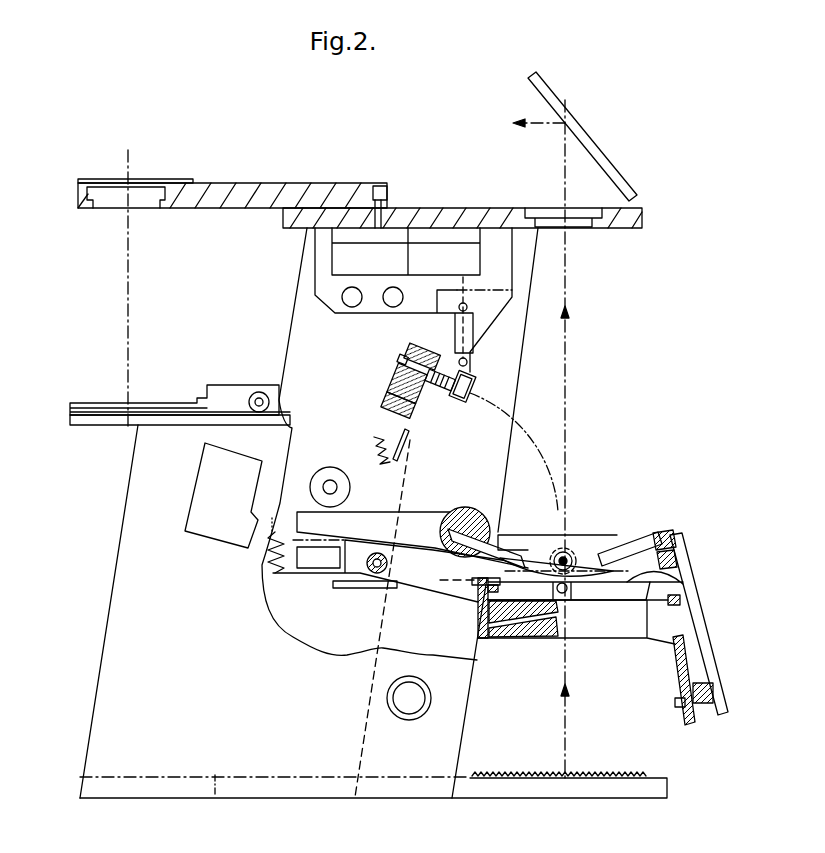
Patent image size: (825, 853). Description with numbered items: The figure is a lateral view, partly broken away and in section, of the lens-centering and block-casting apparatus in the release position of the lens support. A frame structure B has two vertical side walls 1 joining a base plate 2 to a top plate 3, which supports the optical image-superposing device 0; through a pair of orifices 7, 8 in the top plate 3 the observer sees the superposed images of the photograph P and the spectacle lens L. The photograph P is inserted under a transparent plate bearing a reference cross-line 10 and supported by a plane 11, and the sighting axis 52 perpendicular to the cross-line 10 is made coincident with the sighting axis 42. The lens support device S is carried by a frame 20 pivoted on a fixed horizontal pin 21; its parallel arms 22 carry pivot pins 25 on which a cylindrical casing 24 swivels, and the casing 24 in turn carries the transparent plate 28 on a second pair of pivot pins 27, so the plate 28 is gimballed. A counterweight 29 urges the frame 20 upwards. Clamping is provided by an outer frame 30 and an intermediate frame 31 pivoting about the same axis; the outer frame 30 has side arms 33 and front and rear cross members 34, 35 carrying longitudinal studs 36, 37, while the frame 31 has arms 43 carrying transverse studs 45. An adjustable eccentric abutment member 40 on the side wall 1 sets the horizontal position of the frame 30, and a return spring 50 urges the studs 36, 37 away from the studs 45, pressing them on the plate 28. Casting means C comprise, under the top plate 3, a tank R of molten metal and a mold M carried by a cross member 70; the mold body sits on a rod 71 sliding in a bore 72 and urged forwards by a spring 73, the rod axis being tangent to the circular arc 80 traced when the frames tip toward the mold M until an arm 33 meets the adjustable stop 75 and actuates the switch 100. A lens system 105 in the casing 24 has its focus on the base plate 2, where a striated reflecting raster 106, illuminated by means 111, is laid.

The optical device 0 is at (550, 106).
The vertical side wall 1 is at (128, 534).
The base plate 2 is at (521, 790).
The top plate 3 is at (426, 212).
The orifice 7 is at (580, 228).
The orifice 8 is at (110, 207).
The reference cross-line 10 is at (128, 400).
The plane 11 is at (112, 421).
The frame 20 is at (431, 590).
The pivot pin 21 is at (373, 576).
The parallel arm 22 is at (456, 586).
The cylindrical casing 24 is at (626, 633).
The pivot pin 25 is at (566, 594).
The pivot pin 27 is at (459, 645).
The transparent plate 28 is at (684, 582).
The counterweight 29 is at (205, 506).
The outer frame 30 is at (548, 534).
The frame 31 is at (560, 548).
The side arm 33 is at (628, 540).
The front cross member 34 is at (670, 534).
The rear cross member 35 is at (452, 519).
The longitudinal stud 36 is at (630, 551).
The longitudinal stud 37 is at (479, 522).
The adjustable eccentric abutment member 40 is at (331, 480).
The sighting axis 42 is at (566, 370).
The parallel arm 43 is at (418, 543).
The transverse stud 45 is at (567, 558).
The return spring 50 is at (268, 566).
The sighting axis 52 is at (131, 294).
The cross-member 70 is at (398, 384).
The rod 71 is at (418, 352).
The bore 72 is at (404, 360).
The spring 73 is at (441, 386).
The adjustable stop 75 is at (392, 404).
The circular arc 80 is at (528, 457).
The switch 100 is at (392, 435).
The lens system 105 is at (513, 630).
The striated reflecting surface 106 is at (577, 774).
The illuminating means 111 is at (394, 699).
The frame structure B is at (104, 633).
The casting means C is at (510, 318).
The spectacle lens L is at (588, 560).
The mold M is at (462, 398).
The photograph P is at (69, 418).
The tank R is at (313, 274).
The lens support device S is at (565, 642).